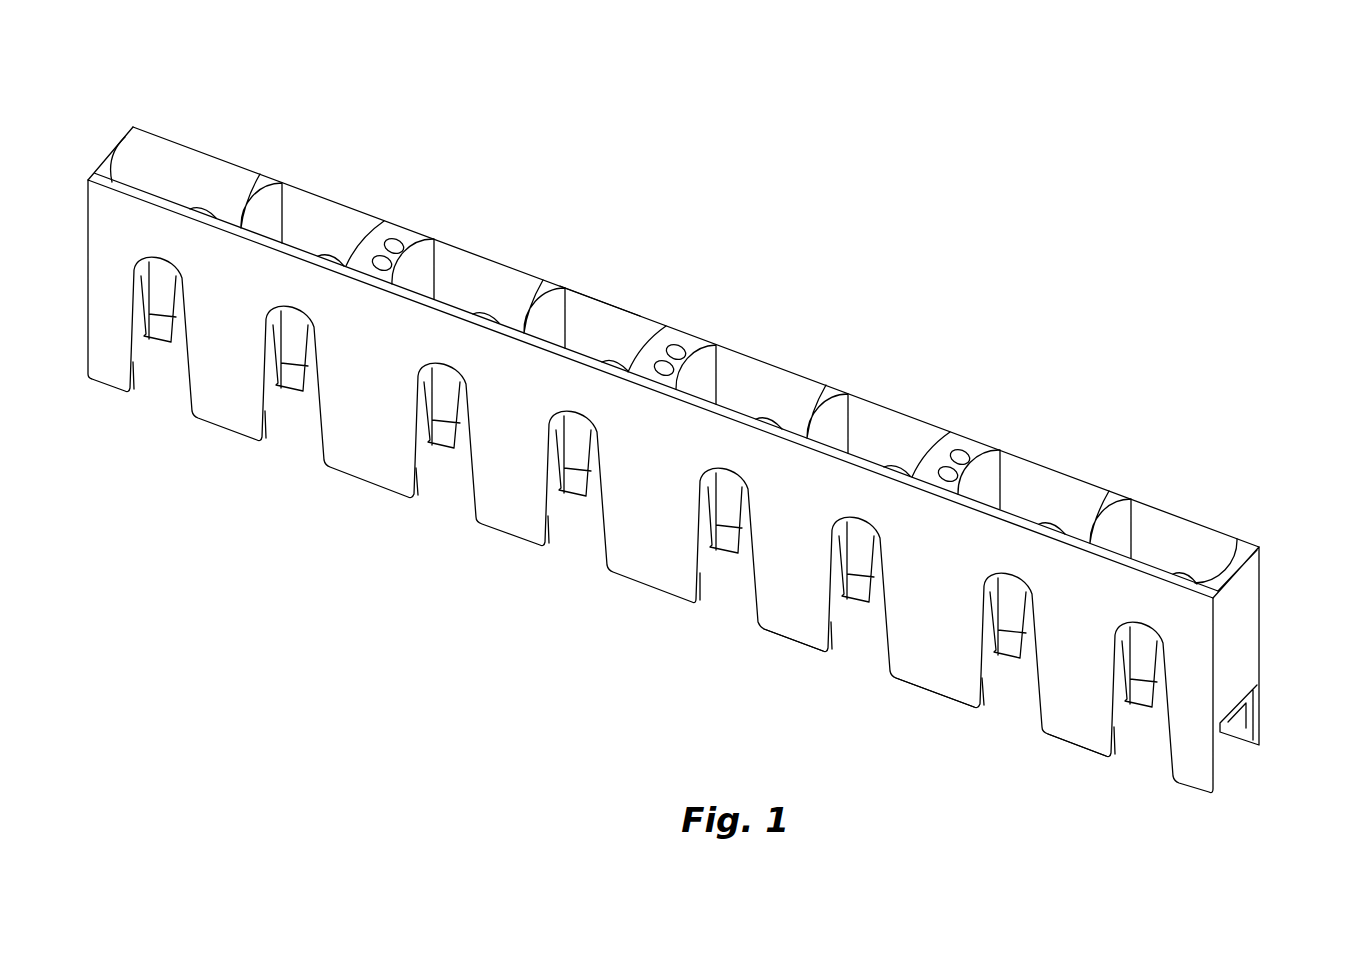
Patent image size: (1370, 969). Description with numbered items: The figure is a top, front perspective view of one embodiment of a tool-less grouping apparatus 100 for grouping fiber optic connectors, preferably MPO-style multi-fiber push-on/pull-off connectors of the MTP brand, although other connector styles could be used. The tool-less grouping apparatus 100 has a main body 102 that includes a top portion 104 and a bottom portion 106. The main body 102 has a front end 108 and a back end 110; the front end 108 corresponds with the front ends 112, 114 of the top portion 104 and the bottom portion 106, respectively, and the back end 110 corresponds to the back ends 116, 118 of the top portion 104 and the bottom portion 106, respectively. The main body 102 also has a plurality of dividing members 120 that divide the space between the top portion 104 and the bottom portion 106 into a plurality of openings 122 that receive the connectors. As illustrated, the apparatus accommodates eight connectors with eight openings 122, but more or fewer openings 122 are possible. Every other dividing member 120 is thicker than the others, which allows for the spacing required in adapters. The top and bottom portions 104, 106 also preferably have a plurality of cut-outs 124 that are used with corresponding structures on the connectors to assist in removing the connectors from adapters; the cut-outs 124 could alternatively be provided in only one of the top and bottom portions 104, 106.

The tool-less grouping apparatus 100 is at (1013, 232).
The main body 102 is at (1248, 623).
The top portion 104 is at (1070, 727).
The bottom portion 106 is at (1158, 505).
The front end 108 is at (826, 395).
The back end 110 is at (925, 695).
The front end of the top portion 112 is at (445, 258).
The front end of the bottom portion 114 is at (600, 300).
The back end of the top portion 116 is at (800, 652).
The back end of the bottom portion 118 is at (720, 556).
The dividing members 120 is at (690, 345).
The openings 122 is at (195, 185).
The cut-outs 124 is at (423, 455).